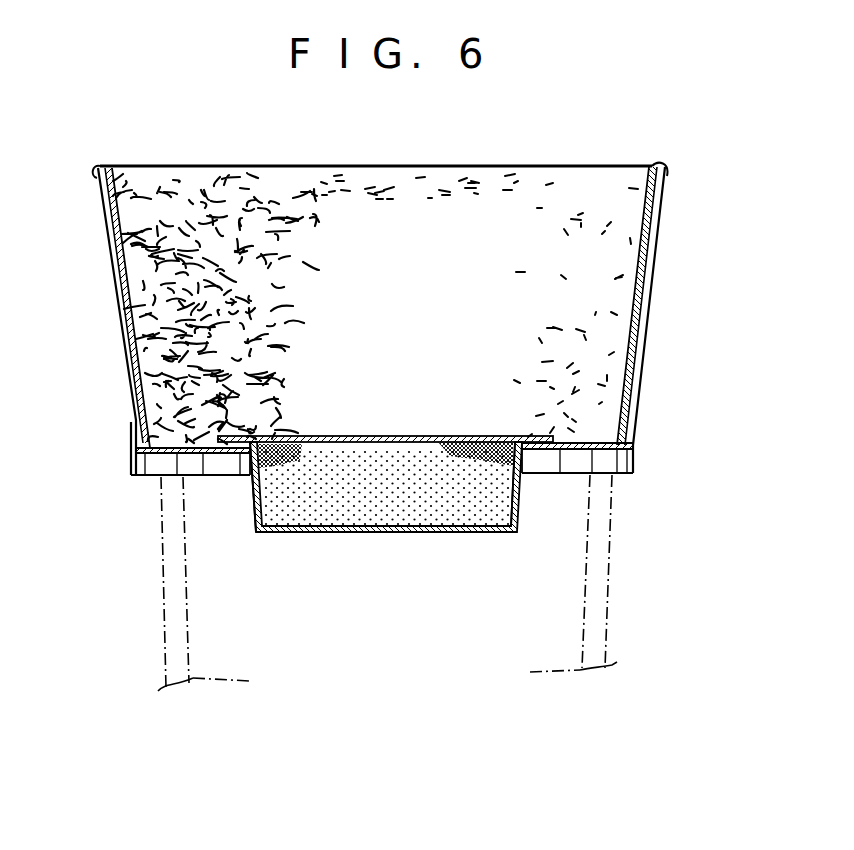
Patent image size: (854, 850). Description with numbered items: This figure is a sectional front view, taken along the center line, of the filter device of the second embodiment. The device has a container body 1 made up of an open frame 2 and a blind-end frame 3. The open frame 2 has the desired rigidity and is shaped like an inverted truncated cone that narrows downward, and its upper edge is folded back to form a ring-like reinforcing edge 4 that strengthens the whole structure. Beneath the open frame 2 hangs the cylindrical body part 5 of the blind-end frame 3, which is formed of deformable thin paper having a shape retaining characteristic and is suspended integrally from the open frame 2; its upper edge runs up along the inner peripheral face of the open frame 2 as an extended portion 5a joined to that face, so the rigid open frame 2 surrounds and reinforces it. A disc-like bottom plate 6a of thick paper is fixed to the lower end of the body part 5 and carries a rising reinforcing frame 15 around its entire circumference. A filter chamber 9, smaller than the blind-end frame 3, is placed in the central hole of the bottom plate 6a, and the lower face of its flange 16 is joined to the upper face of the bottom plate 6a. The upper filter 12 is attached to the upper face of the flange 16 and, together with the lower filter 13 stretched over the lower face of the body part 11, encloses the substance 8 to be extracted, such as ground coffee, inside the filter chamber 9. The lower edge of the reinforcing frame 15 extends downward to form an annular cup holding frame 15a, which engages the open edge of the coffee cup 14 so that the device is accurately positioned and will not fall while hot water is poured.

The container body 1 is at (688, 279).
The open frame 2 is at (661, 214).
The blind-end frame 3 is at (727, 318).
The reinforcing edge 4 is at (97, 172).
The body part 5 is at (643, 336).
The extended portion 5a is at (552, 182).
The bottom plate 6a is at (580, 438).
The substance to be extracted 8 is at (400, 505).
The filter chamber 9 is at (346, 538).
The body part of the filter chamber 11 is at (252, 498).
The upper filter 12 is at (365, 436).
The lower filter 13 is at (462, 533).
The coffee cup 14 is at (163, 605).
The reinforcing frame 15 is at (634, 455).
The cup holding frame 15a is at (554, 463).
The flange 16 is at (535, 436).